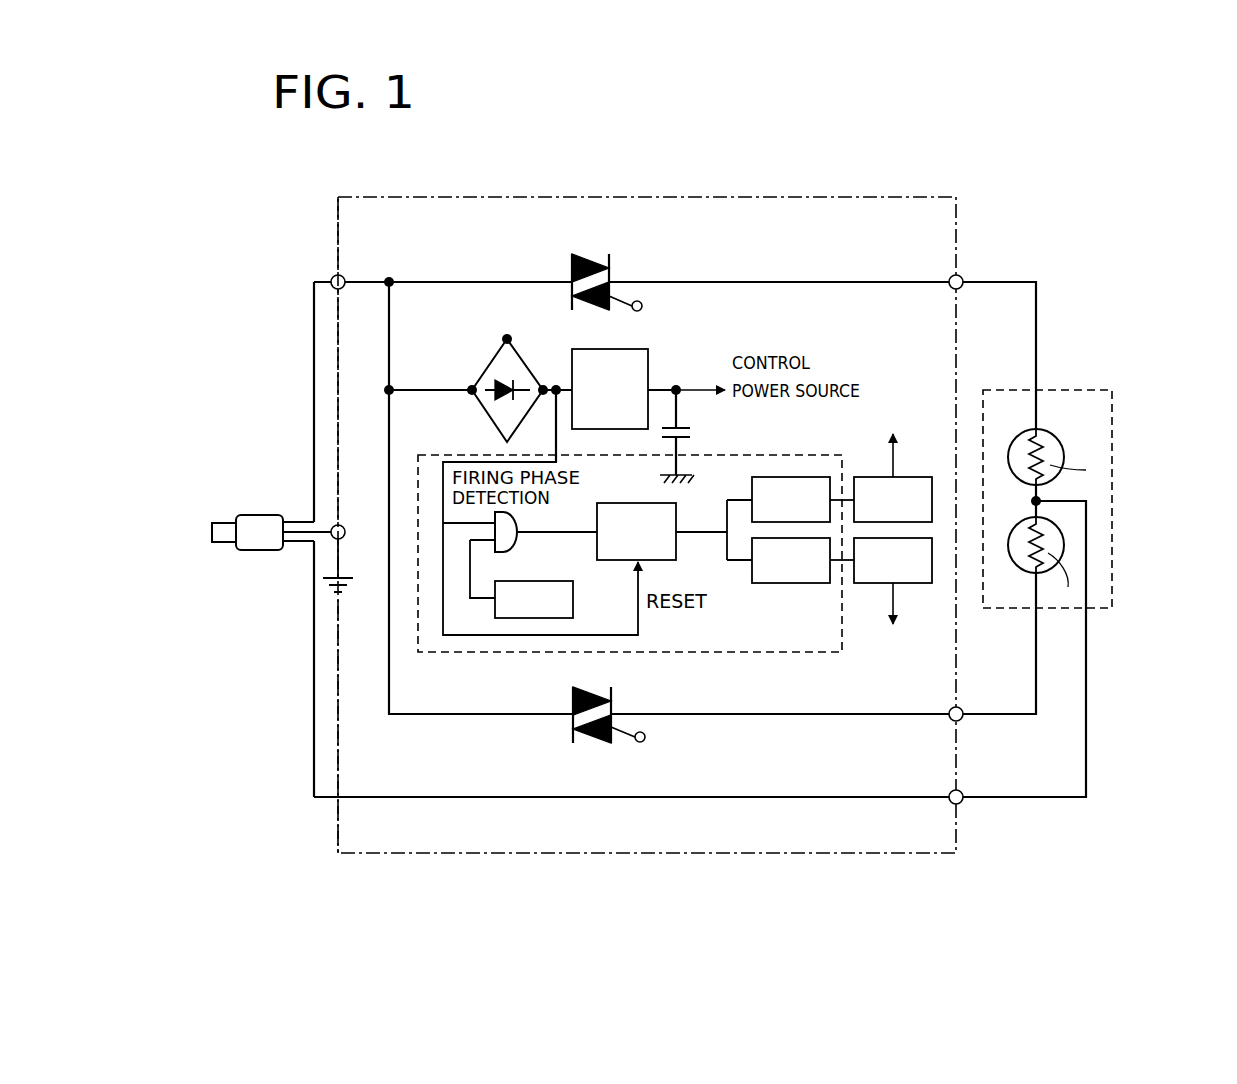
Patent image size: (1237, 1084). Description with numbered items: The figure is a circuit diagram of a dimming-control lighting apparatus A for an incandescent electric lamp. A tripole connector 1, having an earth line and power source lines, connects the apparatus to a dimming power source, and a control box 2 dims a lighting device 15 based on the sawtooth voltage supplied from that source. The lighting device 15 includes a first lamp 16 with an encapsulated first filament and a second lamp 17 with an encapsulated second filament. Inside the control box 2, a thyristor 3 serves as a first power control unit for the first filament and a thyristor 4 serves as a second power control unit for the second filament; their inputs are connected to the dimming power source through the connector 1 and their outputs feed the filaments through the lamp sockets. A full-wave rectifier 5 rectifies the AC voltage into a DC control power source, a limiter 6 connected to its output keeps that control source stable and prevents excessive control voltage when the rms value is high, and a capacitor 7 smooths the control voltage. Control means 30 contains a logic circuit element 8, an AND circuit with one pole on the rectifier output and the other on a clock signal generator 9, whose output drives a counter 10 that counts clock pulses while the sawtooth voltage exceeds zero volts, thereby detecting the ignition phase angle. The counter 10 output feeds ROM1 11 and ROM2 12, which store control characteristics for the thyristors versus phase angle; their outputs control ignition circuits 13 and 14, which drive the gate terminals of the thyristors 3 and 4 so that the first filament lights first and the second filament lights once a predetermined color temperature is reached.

The tripole connector 1 is at (265, 518).
The control box 2 is at (453, 853).
The thyristor TR1 3 is at (575, 258).
The thyristor TR2 4 is at (573, 718).
The full-wave rectifier 5 is at (490, 352).
The limiter 6 is at (645, 368).
The capacitor 7 is at (690, 432).
The logic circuit element 8 is at (500, 551).
The clock signal generator 9 is at (573, 598).
The counter 10 is at (636, 503).
The ROM1 11 is at (785, 477).
The ROM2 12 is at (783, 583).
The ignition circuit 13 is at (930, 478).
The ignition circuit 14 is at (912, 583).
The lighting device 15 is at (1088, 388).
The first lamp 16 is at (1060, 443).
The second lamp 17 is at (1064, 538).
The control means 30 is at (538, 654).
The dimming-control lighting apparatus A is at (1049, 309).